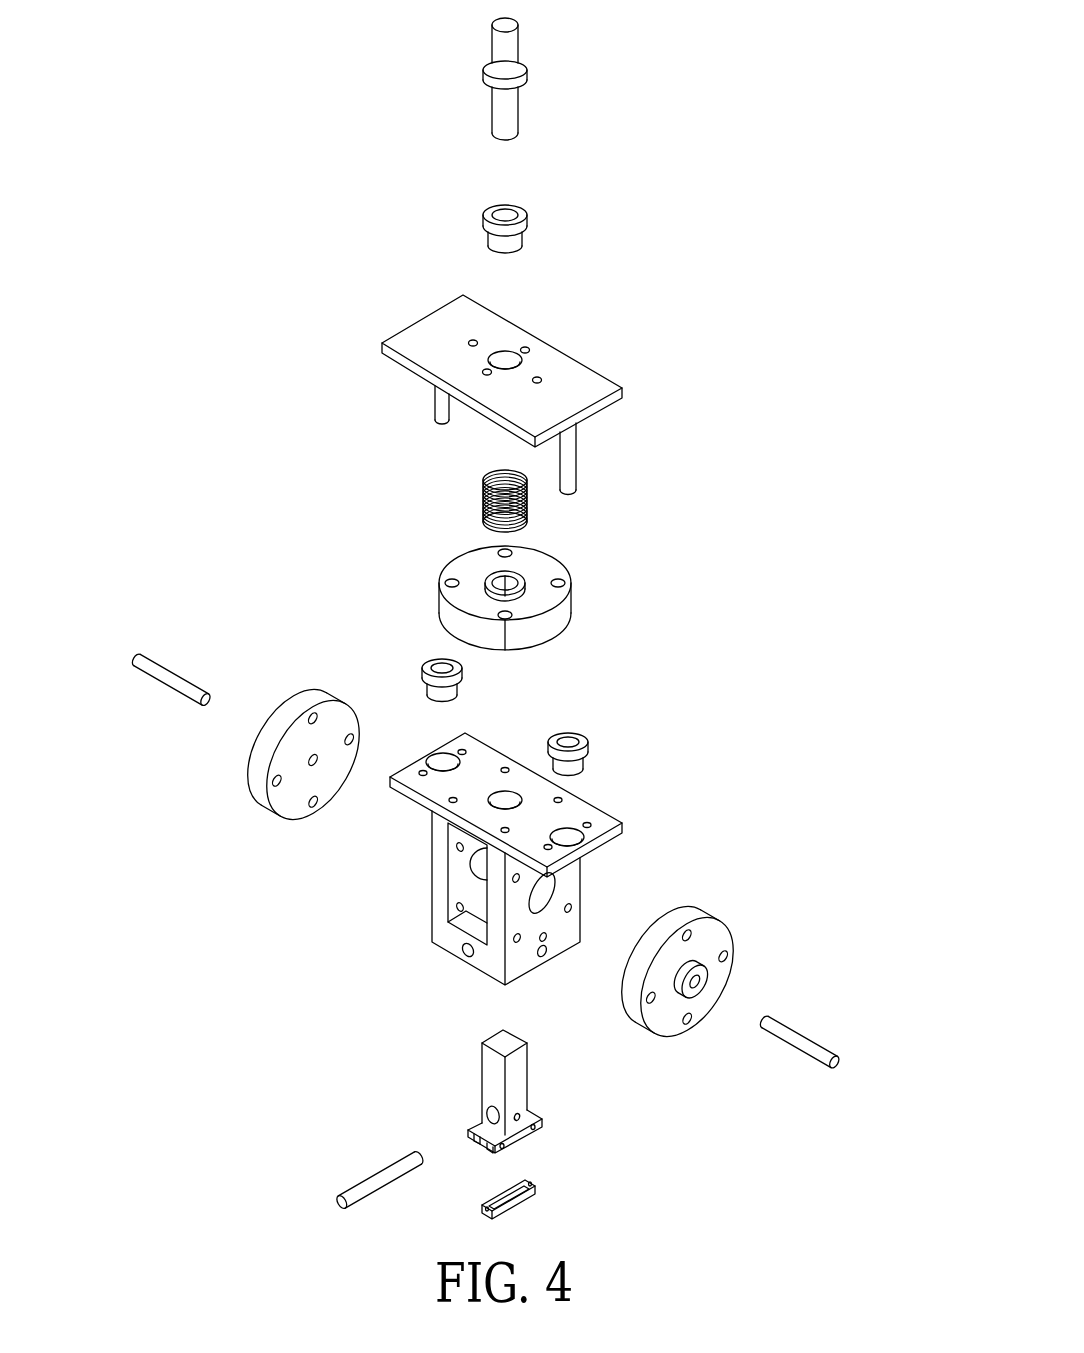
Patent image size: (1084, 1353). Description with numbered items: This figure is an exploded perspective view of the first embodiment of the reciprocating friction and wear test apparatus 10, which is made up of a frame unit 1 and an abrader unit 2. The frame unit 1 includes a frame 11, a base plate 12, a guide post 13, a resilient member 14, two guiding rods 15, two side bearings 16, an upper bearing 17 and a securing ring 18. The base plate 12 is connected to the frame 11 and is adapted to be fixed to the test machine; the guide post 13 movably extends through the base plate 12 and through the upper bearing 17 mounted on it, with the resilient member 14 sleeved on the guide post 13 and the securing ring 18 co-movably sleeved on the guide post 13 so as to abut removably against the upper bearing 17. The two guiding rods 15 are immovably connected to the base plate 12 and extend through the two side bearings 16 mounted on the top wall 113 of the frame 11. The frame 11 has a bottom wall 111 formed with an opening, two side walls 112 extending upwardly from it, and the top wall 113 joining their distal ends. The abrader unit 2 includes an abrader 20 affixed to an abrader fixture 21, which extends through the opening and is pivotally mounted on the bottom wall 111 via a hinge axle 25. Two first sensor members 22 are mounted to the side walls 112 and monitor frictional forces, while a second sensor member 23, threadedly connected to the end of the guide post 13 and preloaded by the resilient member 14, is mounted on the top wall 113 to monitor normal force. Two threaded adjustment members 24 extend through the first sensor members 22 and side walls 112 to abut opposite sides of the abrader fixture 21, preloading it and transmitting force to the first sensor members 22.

The reciprocating friction and wear test apparatus 10 is at (652, 118).
The guide post 13 is at (508, 22).
The securing ring 18 is at (485, 72).
The upper bearing 17 is at (485, 215).
The base plate 12 is at (583, 392).
The guiding rods 15 is at (436, 413).
The resilient member 14 is at (485, 475).
The second sensor member 23 is at (557, 572).
The side bearings 16 is at (426, 664).
The frame unit 1 is at (660, 838).
The frame 11 is at (625, 820).
The top wall 113 is at (577, 802).
The side walls 112 is at (432, 880).
The bottom wall 111 is at (457, 948).
The first sensor members 22 is at (258, 795).
The adjustment members 24 is at (185, 683).
The abrader unit 2 is at (733, 1070).
The abrader fixture 21 is at (528, 1088).
The hinge axle 25 is at (378, 1180).
The abrader 20 is at (522, 1200).